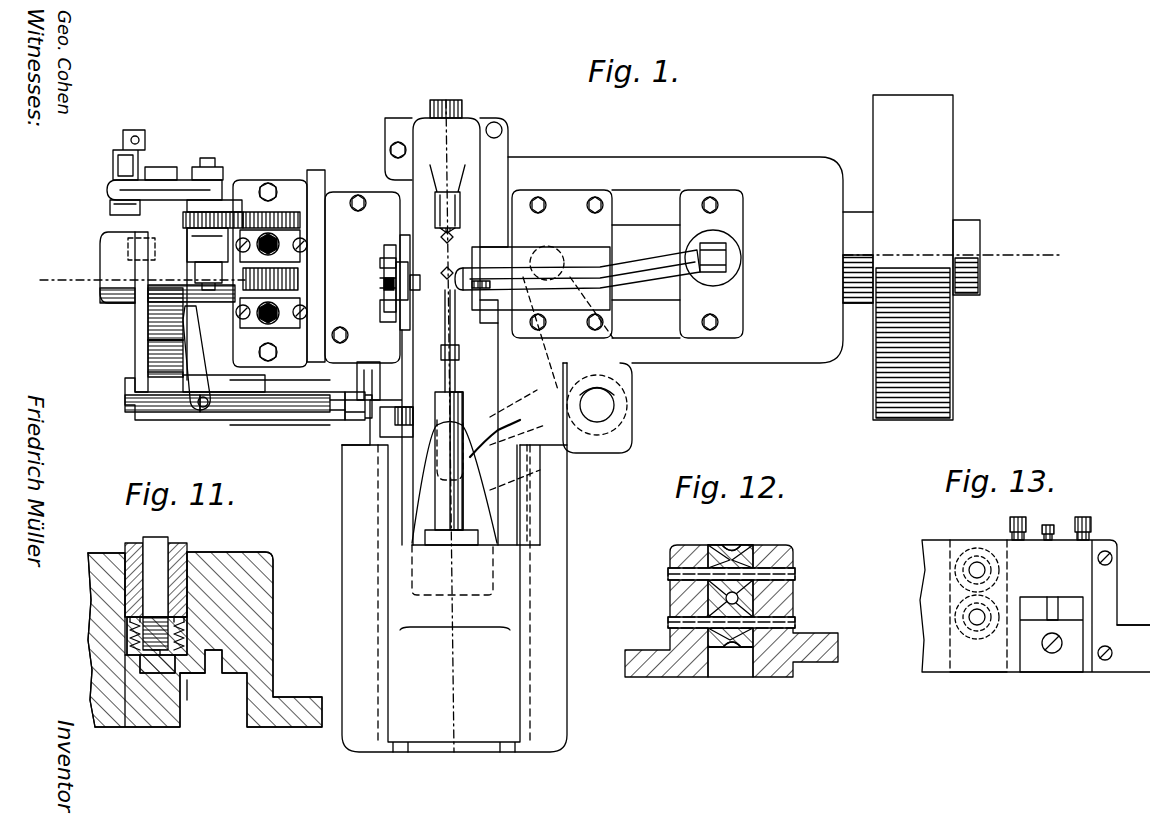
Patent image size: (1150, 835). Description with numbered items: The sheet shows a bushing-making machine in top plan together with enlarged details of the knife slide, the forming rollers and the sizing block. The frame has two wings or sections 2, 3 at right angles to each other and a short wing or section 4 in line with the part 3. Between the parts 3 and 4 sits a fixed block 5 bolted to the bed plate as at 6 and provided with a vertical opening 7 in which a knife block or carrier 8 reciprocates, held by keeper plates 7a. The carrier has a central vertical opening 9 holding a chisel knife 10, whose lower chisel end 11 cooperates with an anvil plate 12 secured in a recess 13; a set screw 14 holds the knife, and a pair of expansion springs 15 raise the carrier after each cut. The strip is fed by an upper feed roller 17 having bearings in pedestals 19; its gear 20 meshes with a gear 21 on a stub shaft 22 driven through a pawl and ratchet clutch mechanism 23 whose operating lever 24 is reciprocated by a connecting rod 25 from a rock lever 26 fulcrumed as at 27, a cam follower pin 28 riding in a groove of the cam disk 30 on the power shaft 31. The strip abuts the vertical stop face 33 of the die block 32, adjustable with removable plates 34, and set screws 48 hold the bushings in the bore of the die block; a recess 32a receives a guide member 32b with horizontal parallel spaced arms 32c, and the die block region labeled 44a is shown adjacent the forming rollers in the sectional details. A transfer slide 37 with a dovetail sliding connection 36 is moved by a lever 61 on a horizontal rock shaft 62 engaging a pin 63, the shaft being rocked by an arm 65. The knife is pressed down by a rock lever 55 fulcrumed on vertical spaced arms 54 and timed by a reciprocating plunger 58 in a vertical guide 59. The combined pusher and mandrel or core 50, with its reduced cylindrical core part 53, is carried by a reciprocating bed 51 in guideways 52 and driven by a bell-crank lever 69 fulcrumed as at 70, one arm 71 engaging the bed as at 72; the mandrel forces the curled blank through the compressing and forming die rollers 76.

In FIG. 1, the wing or section 2 is at (548, 570).
In FIG. 1, the wing or section 3 is at (446, 100).
In FIG. 13, the wing or section 3 is at (1103, 592).
In FIG. 1, the short wing or section 4 is at (315, 175).
In FIG. 1, the fixed block 5 is at (335, 195).
In FIG. 11, the fixed block 5 is at (90, 594).
In FIG. 1, the bolt 6 is at (357, 198).
In FIG. 1, the vertical opening 7 is at (384, 296).
In FIG. 11, the vertical opening 7 is at (188, 556).
In FIG. 1, the keeper plates 7a is at (405, 240).
In FIG. 1, the knife block or carrier 8 is at (388, 248).
In FIG. 11, the knife block or carrier 8 is at (125, 545).
In FIG. 1, the central vertical opening 9 is at (388, 285).
In FIG. 11, the central vertical opening 9 is at (172, 540).
In FIG. 1, the chisel knife 10 is at (390, 300).
In FIG. 11, the chisel knife 10 is at (155, 540).
In FIG. 11, the lower chisel end 11 is at (166, 630).
In FIG. 1, the anvil plate 12 is at (312, 286).
In FIG. 11, the anvil plate 12 is at (185, 685).
In FIG. 11, the recess 13 is at (140, 665).
In FIG. 1, the set screw 14 is at (416, 278).
In FIG. 11, the expansion springs 15 is at (185, 633).
In FIG. 1, the upper feed roller 17 is at (305, 266).
In FIG. 1, the pedestals 19 is at (305, 246).
In FIG. 1, the gear 20 is at (292, 212).
In FIG. 1, the gear 21 is at (232, 200).
In FIG. 1, the stub shaft 22 is at (212, 167).
In FIG. 1, the pawl and ratchet clutch mechanism 23 is at (165, 167).
In FIG. 1, the operating lever 24 is at (108, 192).
In FIG. 1, the connecting rod 25 is at (125, 140).
In FIG. 1, the rock lever 26 is at (135, 330).
In FIG. 1, the fulcrum 27 is at (128, 403).
In FIG. 1, the cam follower pin 28 is at (100, 300).
In FIG. 1, the cam disk 30 is at (158, 350).
In FIG. 1, the power shaft 31 is at (102, 268).
In FIG. 1, the die block 32 is at (478, 180).
In FIG. 12, the die block 32 is at (792, 560).
In FIG. 13, the die block 32 is at (935, 555).
In FIG. 13, the recess 32a is at (1020, 675).
In FIG. 13, the guide member 32b is at (1078, 675).
In FIG. 13, the horizontal parallel spaced arms 32c is at (1068, 600).
In FIG. 1, the vertical stop face 33 is at (450, 270).
In FIG. 1, the removable plates 34 is at (462, 325).
In FIG. 1, the dovetail sliding connection 36 is at (395, 385).
In FIG. 1, the transfer slide 37 is at (405, 362).
In FIG. 1, the guide plate 44a is at (458, 190).
In FIG. 12, the guide plate 44a is at (765, 662).
In FIG. 13, the guide plate 44a is at (965, 660).
In FIG. 1, the set screws 48 is at (455, 236).
In FIG. 1, the combined pusher and mandrel or core 50 is at (462, 400).
In FIG. 1, the reciprocating bed 51 is at (485, 492).
In FIG. 1, the guideways 52 is at (522, 520).
In FIG. 1, the reduced cylindrical core part 53 is at (458, 350).
In FIG. 1, the vertical spaced arms 54 is at (580, 250).
In FIG. 1, the rock lever 55 is at (612, 268).
In FIG. 1, the reciprocating plunger 58 is at (722, 246).
In FIG. 1, the vertical guide 59 is at (718, 280).
In FIG. 1, the lever 61 is at (372, 450).
In FIG. 1, the horizontal rock shaft 62 is at (305, 415).
In FIG. 1, the pin 63 is at (348, 420).
In FIG. 1, the arm 65 is at (192, 345).
In FIG. 1, the bell-crank lever 69 is at (616, 405).
In FIG. 1, the fulcrum 70 is at (600, 418).
In FIG. 1, the arm 71 is at (465, 418).
In FIG. 1, the pivot 72 is at (490, 445).
In FIG. 1, the compressing and forming die rollers 76 is at (438, 190).
In FIG. 12, the compressing and forming die rollers 76 is at (745, 550).
In FIG. 13, the compressing and forming die rollers 76 is at (985, 555).